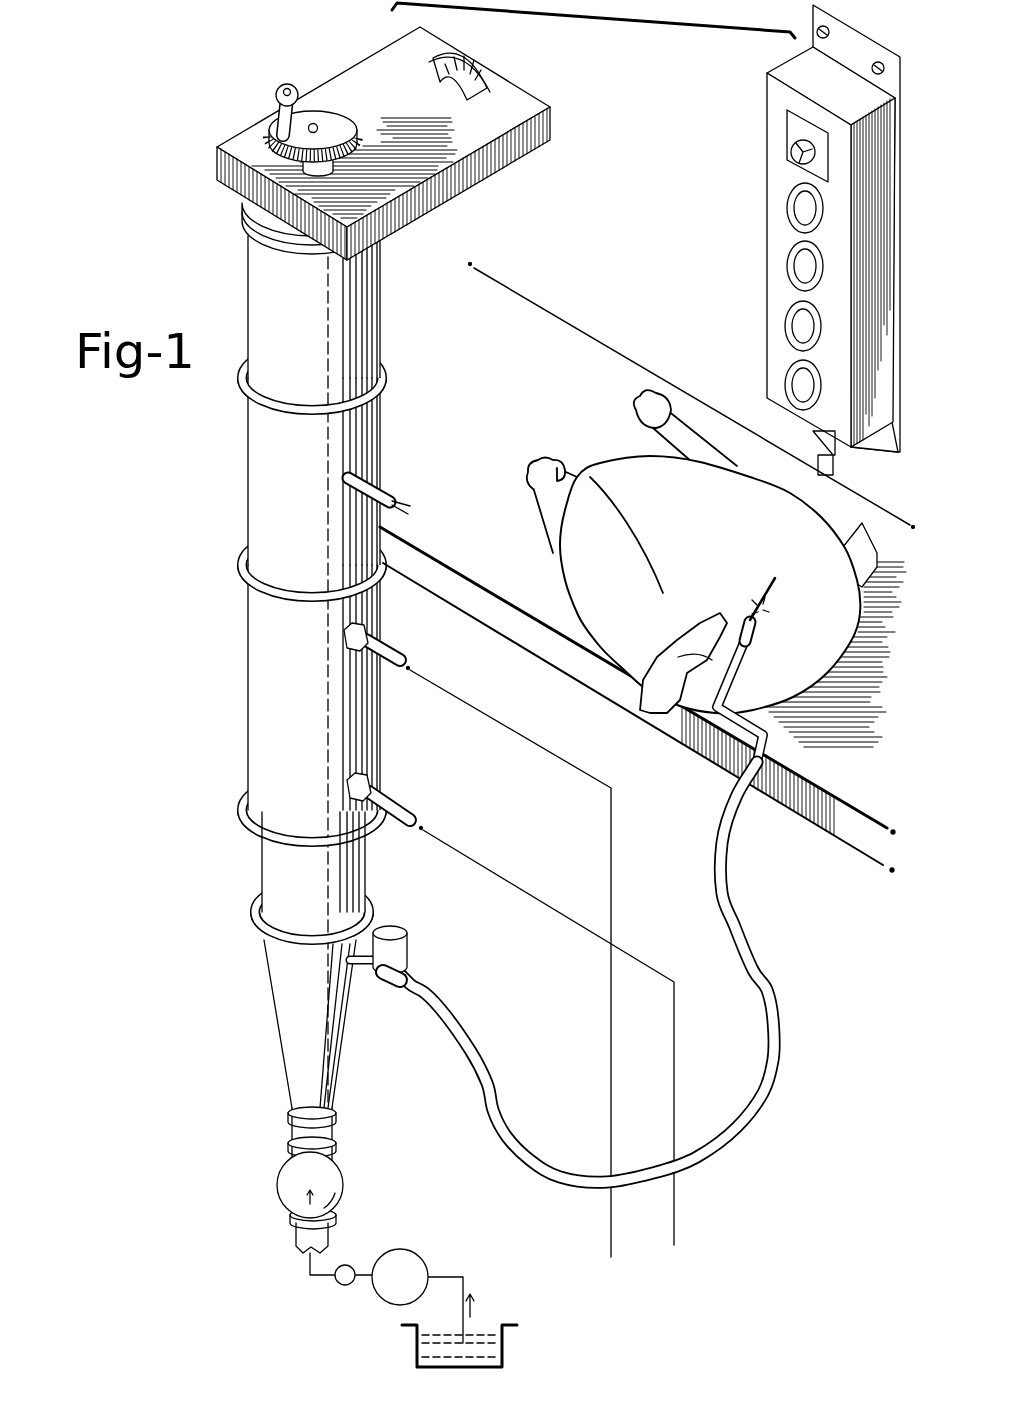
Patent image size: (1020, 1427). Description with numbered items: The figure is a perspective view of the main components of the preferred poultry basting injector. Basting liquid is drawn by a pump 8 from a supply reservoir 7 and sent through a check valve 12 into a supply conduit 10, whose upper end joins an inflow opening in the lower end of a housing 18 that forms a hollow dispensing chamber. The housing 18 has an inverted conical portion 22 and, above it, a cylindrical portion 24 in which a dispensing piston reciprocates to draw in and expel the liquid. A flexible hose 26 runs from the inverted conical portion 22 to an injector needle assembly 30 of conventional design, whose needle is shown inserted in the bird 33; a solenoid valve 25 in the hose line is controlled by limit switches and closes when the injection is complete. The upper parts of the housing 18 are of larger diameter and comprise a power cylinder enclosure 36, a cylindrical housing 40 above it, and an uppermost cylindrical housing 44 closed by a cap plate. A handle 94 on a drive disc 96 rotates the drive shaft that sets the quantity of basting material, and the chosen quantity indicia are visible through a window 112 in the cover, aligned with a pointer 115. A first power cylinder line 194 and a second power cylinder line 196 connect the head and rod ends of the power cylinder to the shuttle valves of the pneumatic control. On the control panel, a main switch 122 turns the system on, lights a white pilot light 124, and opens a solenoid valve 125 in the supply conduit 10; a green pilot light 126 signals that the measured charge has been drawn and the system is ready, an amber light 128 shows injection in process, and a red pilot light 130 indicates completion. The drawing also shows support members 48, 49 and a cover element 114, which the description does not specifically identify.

The supply reservoir 7 is at (503, 1347).
The pump 8 is at (393, 1300).
The supply conduit 10 is at (291, 1134).
The check valve 12 is at (280, 1185).
The housing 18 is at (238, 700).
The inverted conical portion 22 is at (282, 1017).
The cylindrical portion 24 is at (367, 870).
The solenoid valve 25 is at (407, 943).
The flexible hose 26 is at (513, 1134).
The injector needle assembly 30 is at (767, 727).
The bird 33 is at (802, 520).
The power cylinder enclosure 36 is at (253, 632).
The cylindrical housing 40 is at (260, 482).
The uppermost cylindrical housing 44 is at (258, 283).
The support member 48 is at (610, 1229).
The support member 49 is at (675, 1202).
The handle 94 is at (300, 90).
The drive disc 96 is at (337, 110).
The window 112 is at (445, 62).
The control housing 114 is at (525, 100).
The pointer 115 is at (467, 83).
The main switch 122 is at (790, 153).
The white pilot light 124 is at (795, 209).
The solenoid valve 125 is at (348, 1264).
The green pilot light 126 is at (788, 262).
The amber light 128 is at (790, 330).
The red pilot light 130 is at (788, 387).
The first power cylinder line 194 is at (395, 650).
The second power cylinder line 196 is at (397, 800).